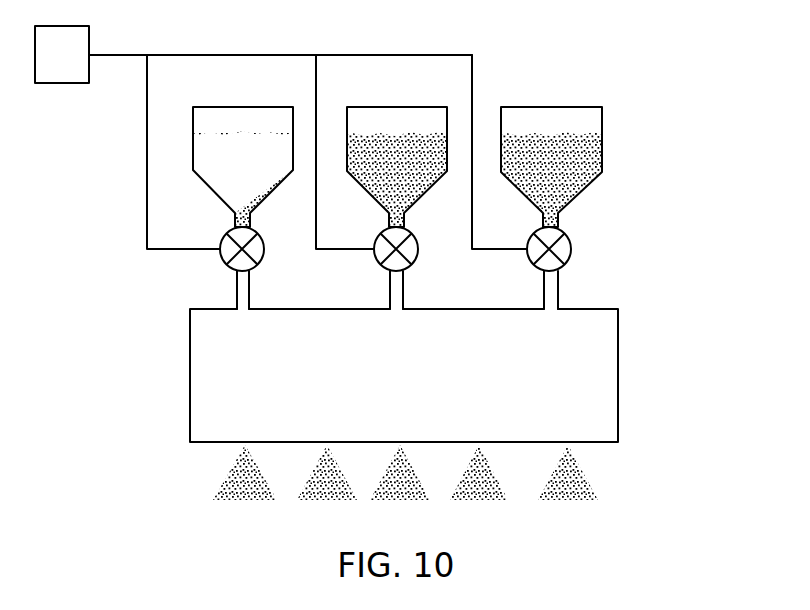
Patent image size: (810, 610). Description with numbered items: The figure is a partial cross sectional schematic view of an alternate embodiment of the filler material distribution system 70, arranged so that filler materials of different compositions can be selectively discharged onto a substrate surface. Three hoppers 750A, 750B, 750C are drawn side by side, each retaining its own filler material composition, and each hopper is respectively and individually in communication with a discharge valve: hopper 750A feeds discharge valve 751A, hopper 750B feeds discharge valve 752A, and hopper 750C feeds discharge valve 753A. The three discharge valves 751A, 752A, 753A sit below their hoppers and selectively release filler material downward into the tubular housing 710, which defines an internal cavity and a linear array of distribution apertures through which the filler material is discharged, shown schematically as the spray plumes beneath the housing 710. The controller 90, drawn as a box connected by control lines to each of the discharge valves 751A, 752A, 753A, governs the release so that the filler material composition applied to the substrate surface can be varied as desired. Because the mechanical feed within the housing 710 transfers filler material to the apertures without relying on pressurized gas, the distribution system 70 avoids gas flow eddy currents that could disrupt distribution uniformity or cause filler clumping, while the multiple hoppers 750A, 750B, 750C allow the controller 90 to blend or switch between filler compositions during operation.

The controller 90 is at (62, 54).
The hopper 750A is at (253, 127).
The hopper 750B is at (425, 123).
The hopper 750C is at (580, 123).
The discharge valve 751A is at (258, 252).
The discharge valve 752A is at (412, 250).
The discharge valve 753A is at (565, 250).
The housing 710 is at (620, 313).
The filler material distribution system 70 is at (648, 343).